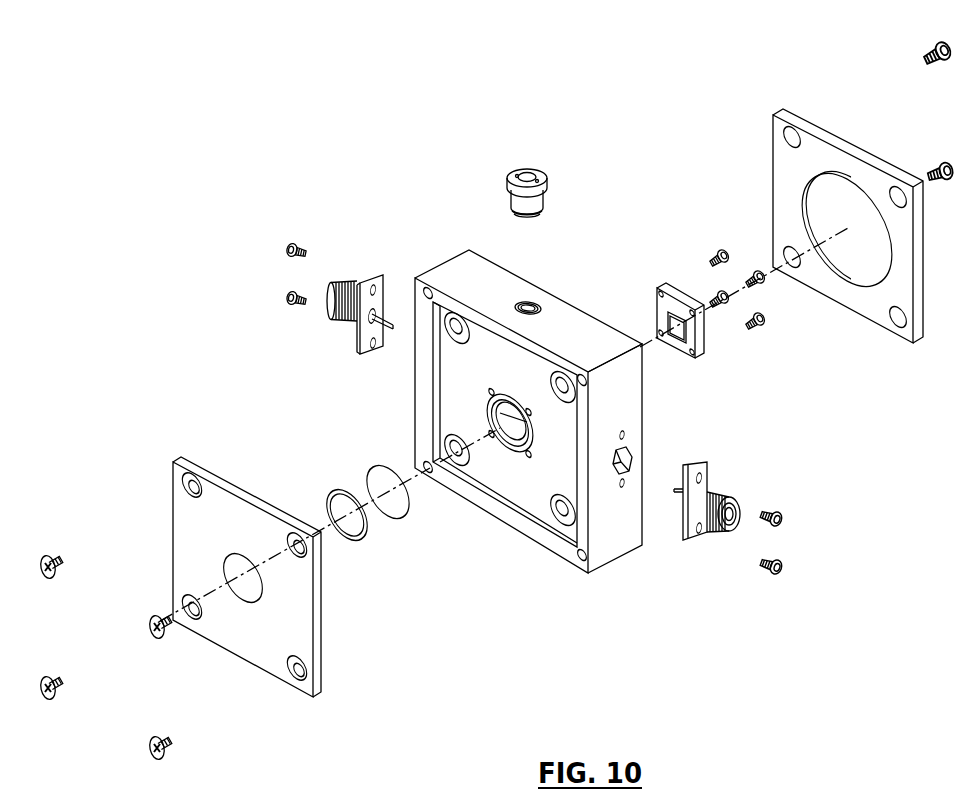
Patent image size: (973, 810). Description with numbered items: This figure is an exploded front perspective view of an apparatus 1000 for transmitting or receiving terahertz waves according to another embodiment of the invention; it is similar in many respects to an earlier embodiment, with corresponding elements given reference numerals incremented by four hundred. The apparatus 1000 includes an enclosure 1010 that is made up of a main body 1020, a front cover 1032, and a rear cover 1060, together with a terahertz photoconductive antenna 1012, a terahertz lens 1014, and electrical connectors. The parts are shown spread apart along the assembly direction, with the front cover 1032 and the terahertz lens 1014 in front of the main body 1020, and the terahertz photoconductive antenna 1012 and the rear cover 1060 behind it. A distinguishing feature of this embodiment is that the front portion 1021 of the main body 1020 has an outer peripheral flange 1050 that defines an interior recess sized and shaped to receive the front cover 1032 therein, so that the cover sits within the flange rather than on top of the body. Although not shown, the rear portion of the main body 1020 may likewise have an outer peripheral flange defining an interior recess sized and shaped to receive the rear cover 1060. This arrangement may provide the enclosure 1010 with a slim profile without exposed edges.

The apparatus 1000 is at (270, 159).
The enclosure 1010 is at (397, 240).
The terahertz photoconductive antenna 1012 is at (672, 276).
The terahertz lens 1014 is at (377, 480).
The main body 1020 is at (470, 260).
The front portion 1021 is at (517, 483).
The front cover 1032 is at (260, 643).
The outer peripheral flange 1050 is at (558, 548).
The rear cover 1060 is at (883, 305).